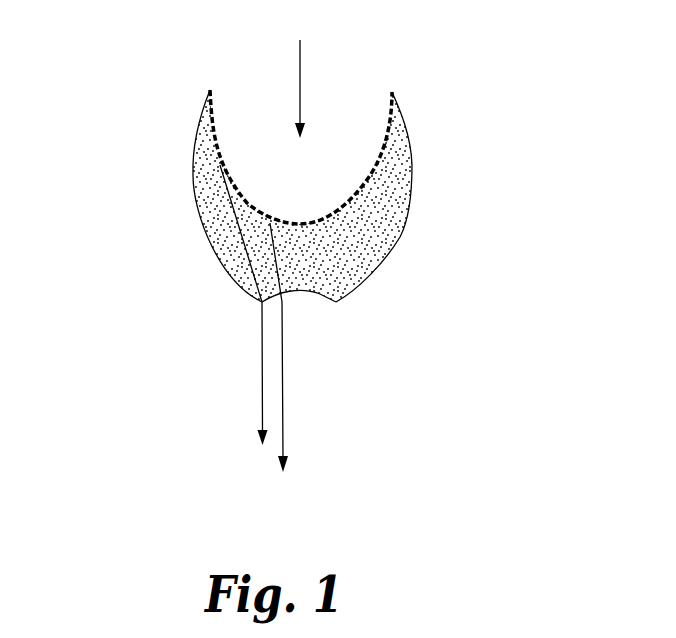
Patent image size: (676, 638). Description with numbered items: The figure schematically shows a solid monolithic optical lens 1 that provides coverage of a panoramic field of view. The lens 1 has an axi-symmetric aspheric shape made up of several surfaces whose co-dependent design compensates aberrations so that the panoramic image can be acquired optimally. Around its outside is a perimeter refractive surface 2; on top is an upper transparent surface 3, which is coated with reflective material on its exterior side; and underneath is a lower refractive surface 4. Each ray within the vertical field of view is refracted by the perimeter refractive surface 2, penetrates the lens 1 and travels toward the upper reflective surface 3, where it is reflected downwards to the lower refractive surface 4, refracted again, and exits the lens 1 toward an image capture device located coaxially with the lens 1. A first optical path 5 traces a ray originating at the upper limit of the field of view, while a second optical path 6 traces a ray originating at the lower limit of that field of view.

The lens 1 is at (298, 70).
The perimeter refractive surface 2 is at (410, 177).
The upper transparent surface 3 is at (359, 193).
The lower refractive surface 4 is at (321, 294).
The first optical path 5 is at (132, 101).
The second optical path 6 is at (220, 432).